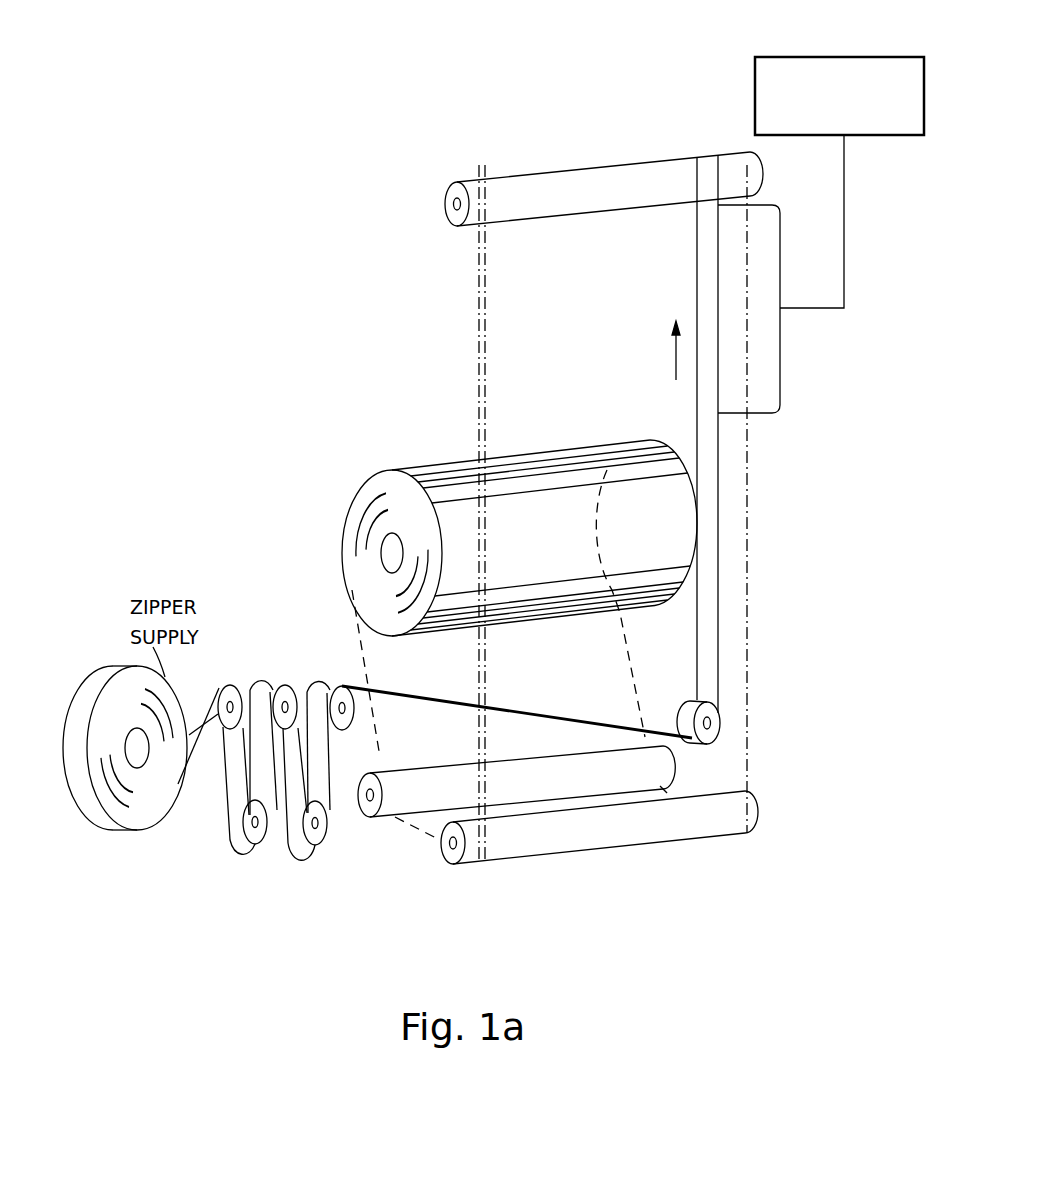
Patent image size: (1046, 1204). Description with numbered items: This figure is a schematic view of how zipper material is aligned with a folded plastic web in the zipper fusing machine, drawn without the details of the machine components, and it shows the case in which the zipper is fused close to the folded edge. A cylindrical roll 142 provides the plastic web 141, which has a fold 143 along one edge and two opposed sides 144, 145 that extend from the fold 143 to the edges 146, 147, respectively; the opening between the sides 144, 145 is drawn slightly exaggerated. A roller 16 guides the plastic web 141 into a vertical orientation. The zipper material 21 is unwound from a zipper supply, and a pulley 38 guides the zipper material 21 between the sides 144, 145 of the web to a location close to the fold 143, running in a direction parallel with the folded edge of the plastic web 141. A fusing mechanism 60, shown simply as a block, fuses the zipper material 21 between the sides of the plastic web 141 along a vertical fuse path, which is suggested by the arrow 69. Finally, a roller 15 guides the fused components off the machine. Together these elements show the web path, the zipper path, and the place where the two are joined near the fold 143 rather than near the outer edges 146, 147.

The fusing mechanism 60 is at (828, 57).
The roller 15 is at (443, 186).
The arrow 69 is at (673, 370).
The zipper material 21 is at (380, 688).
The pulley 38 is at (720, 732).
The cylindrical roll 142 is at (350, 500).
The side 144 is at (430, 669).
The side 145 is at (528, 669).
The plastic web 141 is at (368, 648).
The edge 146 is at (477, 741).
The edge 147 is at (487, 752).
The fold 143 is at (747, 675).
The roller 16 is at (370, 818).